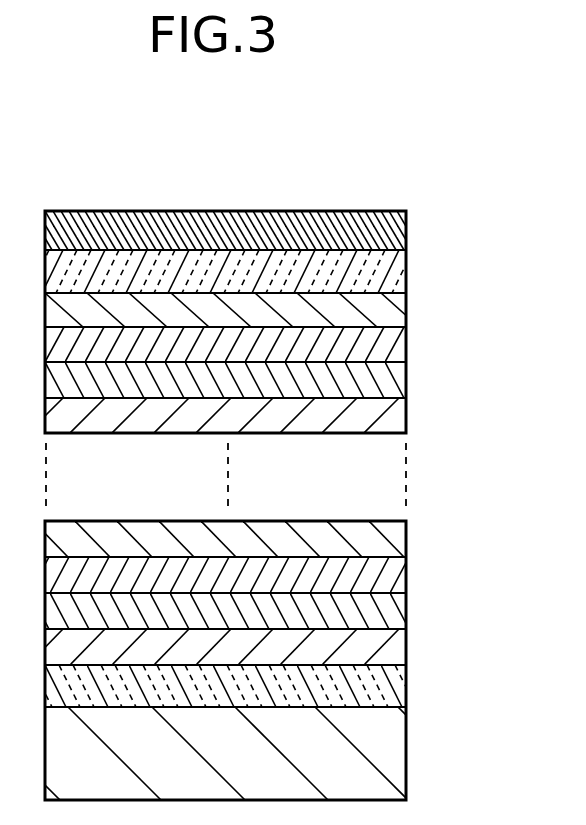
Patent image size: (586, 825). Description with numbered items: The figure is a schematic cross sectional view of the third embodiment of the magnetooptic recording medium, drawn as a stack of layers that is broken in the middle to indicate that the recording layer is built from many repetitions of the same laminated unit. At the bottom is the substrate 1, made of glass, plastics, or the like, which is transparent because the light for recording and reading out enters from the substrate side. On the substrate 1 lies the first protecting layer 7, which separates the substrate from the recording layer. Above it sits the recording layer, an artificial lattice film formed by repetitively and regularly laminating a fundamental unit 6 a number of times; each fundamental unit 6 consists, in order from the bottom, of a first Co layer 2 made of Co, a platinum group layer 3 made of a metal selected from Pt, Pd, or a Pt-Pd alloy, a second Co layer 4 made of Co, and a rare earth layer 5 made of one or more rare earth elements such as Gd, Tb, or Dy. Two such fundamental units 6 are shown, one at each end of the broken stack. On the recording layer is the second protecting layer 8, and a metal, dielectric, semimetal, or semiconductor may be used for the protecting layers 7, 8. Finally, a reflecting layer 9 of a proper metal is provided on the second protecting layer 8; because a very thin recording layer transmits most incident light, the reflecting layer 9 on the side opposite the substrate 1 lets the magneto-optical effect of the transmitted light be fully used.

The substrate 1 is at (400, 760).
The first Co layer 2 is at (252, 531).
The platinum group layer 3 is at (408, 387).
The second Co layer 4 is at (408, 352).
The rare earth layer 5 is at (408, 316).
The fundamental unit 6 is at (288, 479).
The first protecting layer 7 is at (408, 690).
The second protecting layer 8 is at (408, 272).
The reflecting layer 9 is at (408, 225).